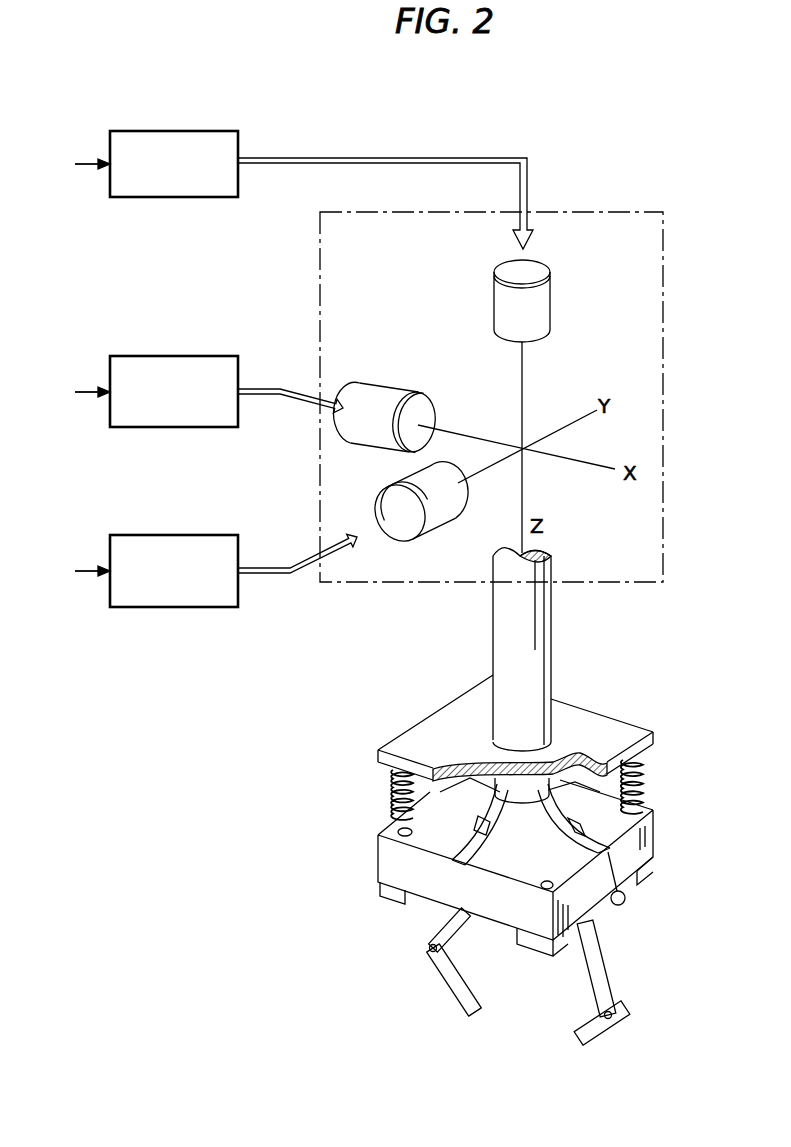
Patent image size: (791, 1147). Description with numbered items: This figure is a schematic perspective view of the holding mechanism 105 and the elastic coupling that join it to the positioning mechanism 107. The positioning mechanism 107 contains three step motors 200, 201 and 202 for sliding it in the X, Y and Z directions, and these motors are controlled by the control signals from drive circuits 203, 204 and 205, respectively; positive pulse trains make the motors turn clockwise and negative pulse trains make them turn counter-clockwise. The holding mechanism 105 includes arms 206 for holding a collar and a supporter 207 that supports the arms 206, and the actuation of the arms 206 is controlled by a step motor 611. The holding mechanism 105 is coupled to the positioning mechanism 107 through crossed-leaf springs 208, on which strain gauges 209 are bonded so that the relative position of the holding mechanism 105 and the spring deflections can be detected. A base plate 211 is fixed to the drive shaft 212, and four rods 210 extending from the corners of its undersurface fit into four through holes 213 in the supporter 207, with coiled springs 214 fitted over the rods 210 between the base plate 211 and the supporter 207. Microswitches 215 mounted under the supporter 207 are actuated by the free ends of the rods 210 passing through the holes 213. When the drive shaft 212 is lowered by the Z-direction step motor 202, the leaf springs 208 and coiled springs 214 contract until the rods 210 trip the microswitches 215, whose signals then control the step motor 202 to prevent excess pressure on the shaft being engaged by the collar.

The drive circuit 205 is at (178, 130).
The drive circuit 203 is at (178, 356).
The drive circuit 204 is at (188, 535).
The positioning mechanism 107 is at (601, 211).
The step motor 202 is at (548, 271).
The step motor 200 is at (390, 393).
The step motor 201 is at (390, 489).
The drive shaft 212 is at (542, 617).
The base plate 211 is at (438, 715).
The rods 210 is at (644, 766).
The coiled springs 214 is at (644, 789).
The through holes 213 is at (653, 830).
The supporter 207 is at (385, 857).
The microswitches 215 is at (388, 893).
The strain gauges 209 is at (573, 831).
The crossed-leaf springs 208 is at (624, 901).
The step motor 611 is at (617, 910).
The holding mechanism 105 is at (422, 981).
The arms 206 is at (603, 1032).